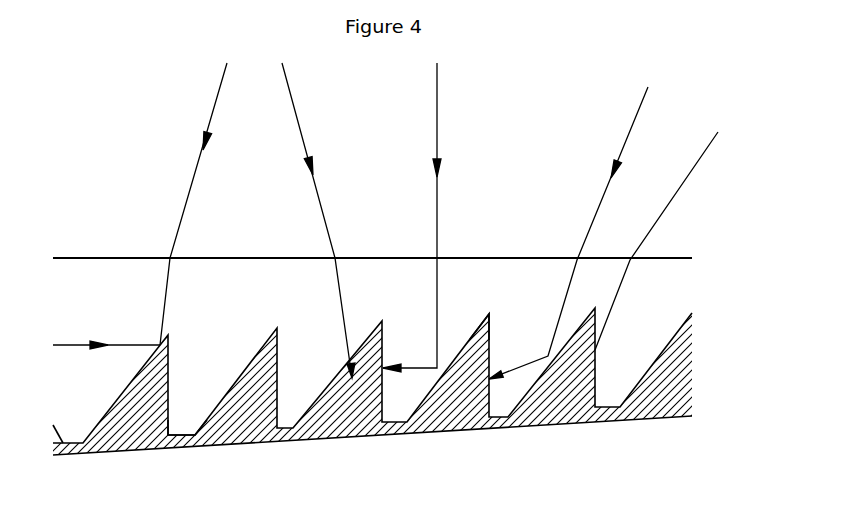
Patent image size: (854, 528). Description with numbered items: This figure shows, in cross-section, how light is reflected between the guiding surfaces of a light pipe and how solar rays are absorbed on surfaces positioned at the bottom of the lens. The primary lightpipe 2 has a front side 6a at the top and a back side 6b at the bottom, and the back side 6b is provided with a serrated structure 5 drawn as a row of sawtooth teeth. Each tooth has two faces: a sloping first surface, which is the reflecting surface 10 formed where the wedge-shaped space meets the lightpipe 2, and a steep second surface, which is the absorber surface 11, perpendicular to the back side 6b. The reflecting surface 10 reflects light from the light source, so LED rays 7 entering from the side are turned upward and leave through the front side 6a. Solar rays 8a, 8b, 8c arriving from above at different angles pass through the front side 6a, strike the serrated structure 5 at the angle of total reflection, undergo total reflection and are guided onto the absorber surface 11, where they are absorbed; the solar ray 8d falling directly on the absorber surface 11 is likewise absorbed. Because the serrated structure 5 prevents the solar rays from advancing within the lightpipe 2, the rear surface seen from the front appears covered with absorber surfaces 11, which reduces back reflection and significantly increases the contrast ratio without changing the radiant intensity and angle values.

The primary lightpipe 2 is at (118, 297).
The serrated structure 5 is at (247, 407).
The front side of the primary light pipe 6a is at (215, 257).
The back side of the primary light pipe 6b is at (450, 433).
The LED rays 7 is at (187, 195).
The solar ray 8a is at (300, 125).
The solar ray 8b is at (438, 122).
The solar ray 8c is at (627, 143).
The solar ray 8d is at (713, 135).
The reflecting surface 10 is at (192, 417).
The absorber surface of the serrated structure 11 is at (490, 318).